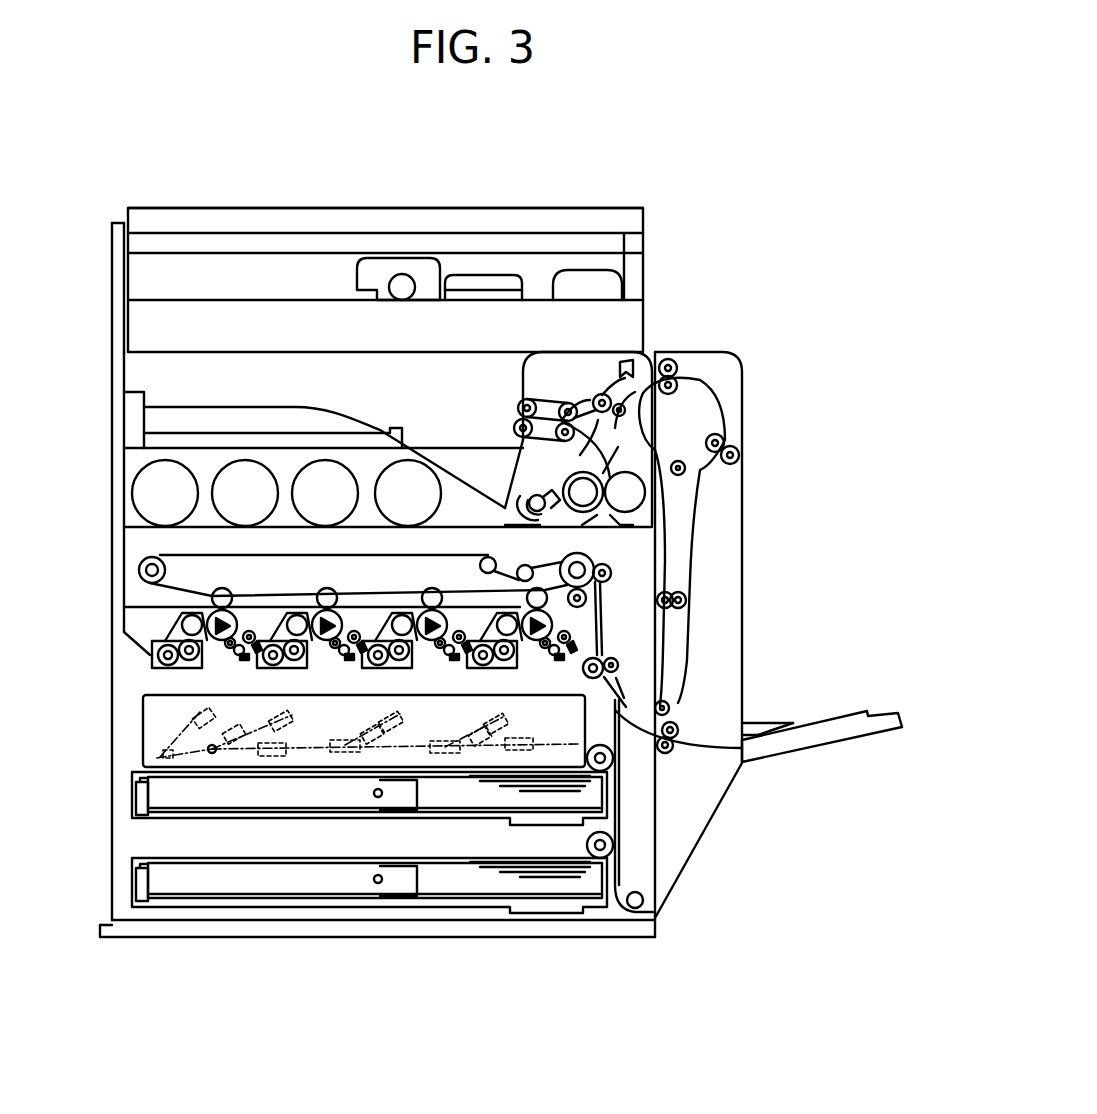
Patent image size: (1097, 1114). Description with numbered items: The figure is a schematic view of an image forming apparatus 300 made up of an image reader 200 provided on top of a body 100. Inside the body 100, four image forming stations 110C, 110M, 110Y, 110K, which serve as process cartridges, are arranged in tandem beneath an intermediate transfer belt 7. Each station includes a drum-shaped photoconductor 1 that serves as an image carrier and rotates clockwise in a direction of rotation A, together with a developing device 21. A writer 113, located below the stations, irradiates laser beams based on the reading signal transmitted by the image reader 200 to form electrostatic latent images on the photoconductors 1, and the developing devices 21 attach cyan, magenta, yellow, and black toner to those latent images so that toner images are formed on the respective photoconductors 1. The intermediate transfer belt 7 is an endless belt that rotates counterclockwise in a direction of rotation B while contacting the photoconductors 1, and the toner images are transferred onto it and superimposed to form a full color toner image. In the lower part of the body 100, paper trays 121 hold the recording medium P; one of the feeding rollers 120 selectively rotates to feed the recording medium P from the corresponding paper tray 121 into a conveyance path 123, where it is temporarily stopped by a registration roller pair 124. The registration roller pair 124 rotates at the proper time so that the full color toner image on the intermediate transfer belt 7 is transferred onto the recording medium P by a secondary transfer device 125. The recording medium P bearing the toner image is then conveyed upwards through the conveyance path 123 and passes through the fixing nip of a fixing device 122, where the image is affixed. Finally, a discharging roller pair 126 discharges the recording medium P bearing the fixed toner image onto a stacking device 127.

The image forming apparatus 300 is at (682, 182).
The image reader 200 is at (124, 285).
The body 100 is at (98, 832).
The stacking device 127 is at (310, 433).
The discharging roller pair 126 is at (517, 421).
The fixing device 122 is at (639, 508).
The intermediate transfer belt 7 is at (198, 554).
The direction of rotation B is at (290, 570).
The secondary transfer device 125 is at (633, 559).
The registration roller pair 124 is at (600, 652).
The developing device 21 is at (148, 642).
The photoconductor 1 is at (214, 612).
The direction of rotation A is at (234, 610).
The image forming station 110C is at (214, 676).
The image forming station 110M is at (321, 676).
The image forming station 110Y is at (423, 676).
The image forming station 110K is at (528, 668).
The writer 113 is at (143, 726).
The feeding roller 120 is at (613, 758).
The conveyance path 123 is at (619, 794).
The paper tray 121 is at (298, 818).
The recording medium P is at (238, 808).